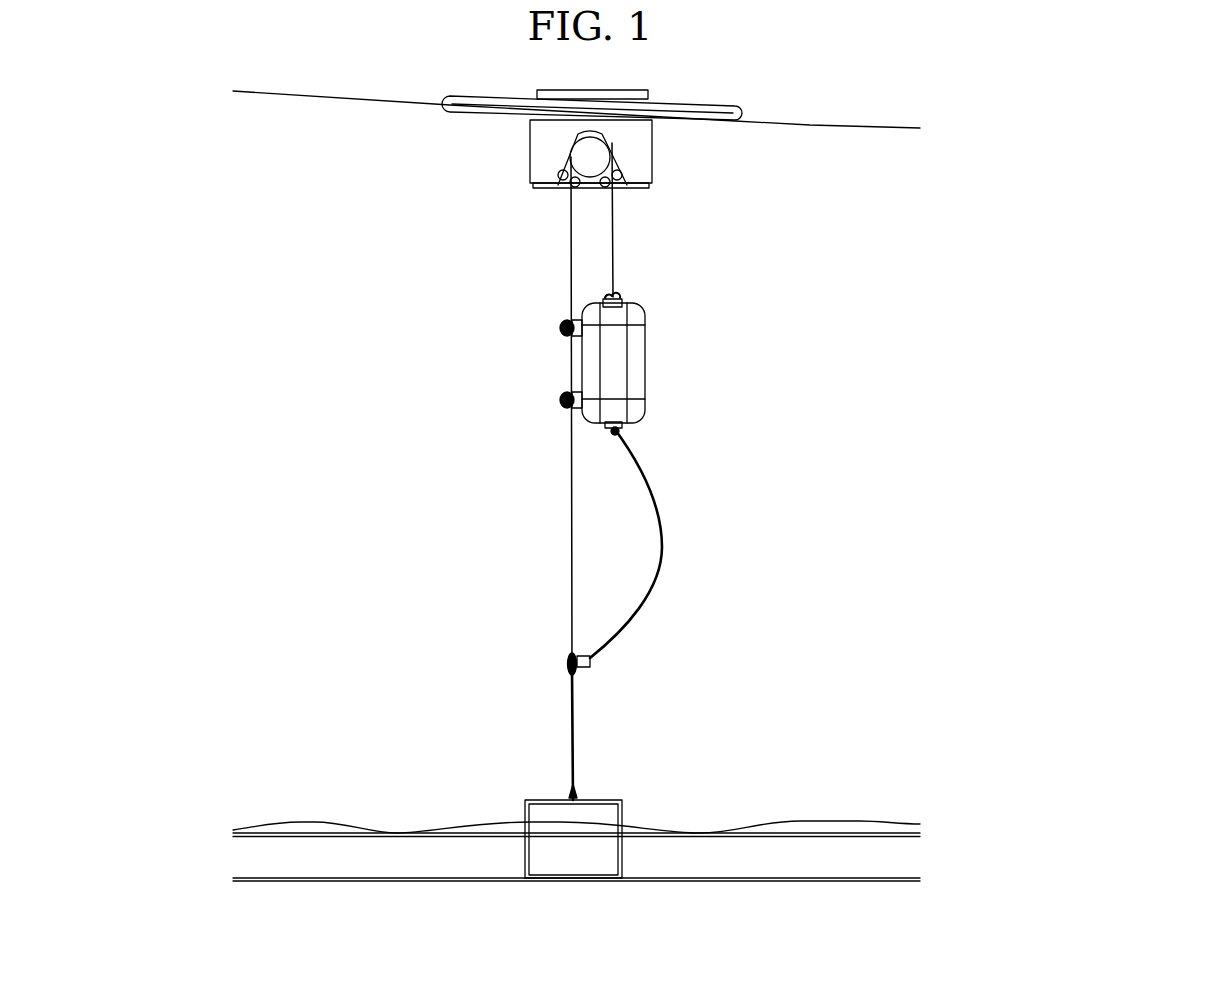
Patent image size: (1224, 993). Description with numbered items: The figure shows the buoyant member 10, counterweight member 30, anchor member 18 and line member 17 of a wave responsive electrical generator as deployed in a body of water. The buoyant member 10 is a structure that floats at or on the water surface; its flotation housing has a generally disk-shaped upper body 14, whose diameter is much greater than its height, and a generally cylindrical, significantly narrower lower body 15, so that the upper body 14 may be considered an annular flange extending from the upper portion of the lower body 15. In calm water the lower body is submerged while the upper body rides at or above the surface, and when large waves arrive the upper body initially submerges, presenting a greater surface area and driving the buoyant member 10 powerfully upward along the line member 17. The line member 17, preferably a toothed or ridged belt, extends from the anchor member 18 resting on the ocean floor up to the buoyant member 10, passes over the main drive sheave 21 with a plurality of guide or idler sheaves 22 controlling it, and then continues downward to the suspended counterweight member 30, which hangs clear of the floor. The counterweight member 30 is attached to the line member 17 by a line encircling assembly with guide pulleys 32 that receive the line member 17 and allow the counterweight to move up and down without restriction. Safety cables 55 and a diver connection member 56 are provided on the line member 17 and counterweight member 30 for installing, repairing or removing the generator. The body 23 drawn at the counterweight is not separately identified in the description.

The buoyant member 10 is at (631, 90).
The upper body 14 is at (738, 103).
The lower body 15 is at (653, 152).
The line member 17 is at (613, 260).
The anchor member 18 is at (622, 801).
The main drive sheave 21 is at (575, 185).
The guide or idler sheaves 22 is at (553, 182).
The counterweight container 23 is at (647, 388).
The counterweight member 30 is at (617, 367).
The guide pulleys 32 is at (562, 395).
The safety cables 55 is at (658, 518).
The diver connection member 56 is at (582, 667).